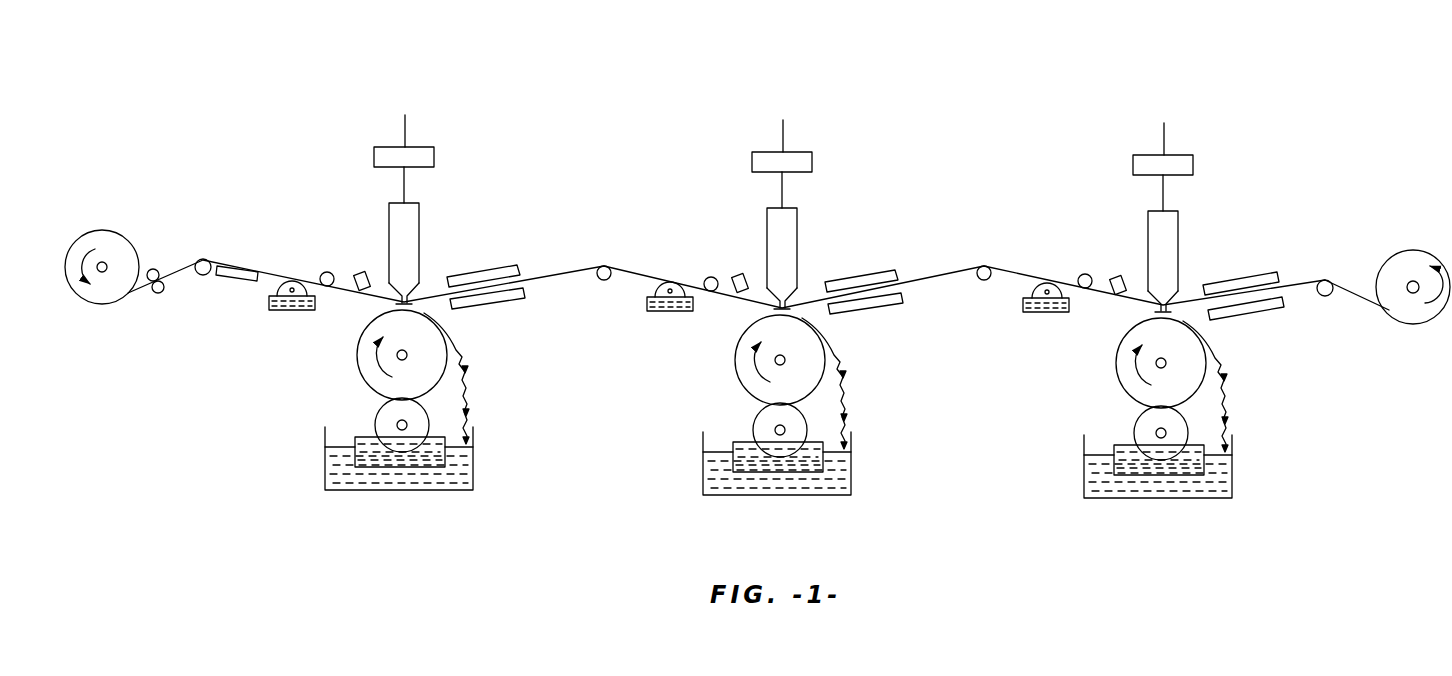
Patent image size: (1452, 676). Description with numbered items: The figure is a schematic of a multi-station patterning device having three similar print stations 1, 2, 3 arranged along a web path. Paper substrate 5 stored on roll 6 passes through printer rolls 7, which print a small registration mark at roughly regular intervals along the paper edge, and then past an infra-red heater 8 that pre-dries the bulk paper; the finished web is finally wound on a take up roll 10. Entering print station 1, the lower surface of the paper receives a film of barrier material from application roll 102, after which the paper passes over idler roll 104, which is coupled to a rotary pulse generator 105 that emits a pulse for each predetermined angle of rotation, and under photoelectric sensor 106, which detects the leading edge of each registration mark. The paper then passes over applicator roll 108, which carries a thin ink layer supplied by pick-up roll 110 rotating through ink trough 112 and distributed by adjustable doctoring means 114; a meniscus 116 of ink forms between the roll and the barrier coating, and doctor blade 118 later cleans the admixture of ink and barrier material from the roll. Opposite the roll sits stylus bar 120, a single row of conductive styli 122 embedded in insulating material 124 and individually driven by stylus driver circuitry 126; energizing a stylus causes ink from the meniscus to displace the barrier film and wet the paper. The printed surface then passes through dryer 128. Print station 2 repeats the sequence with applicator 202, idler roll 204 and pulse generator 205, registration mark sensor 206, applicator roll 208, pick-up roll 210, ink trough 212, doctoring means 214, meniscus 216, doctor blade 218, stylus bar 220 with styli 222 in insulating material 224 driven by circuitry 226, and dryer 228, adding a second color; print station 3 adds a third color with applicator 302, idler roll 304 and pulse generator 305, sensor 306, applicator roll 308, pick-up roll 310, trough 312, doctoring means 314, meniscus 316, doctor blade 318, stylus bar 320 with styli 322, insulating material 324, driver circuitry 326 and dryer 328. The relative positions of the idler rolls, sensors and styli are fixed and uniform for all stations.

The print station 1 is at (363, 199).
The print station 2 is at (752, 215).
The print station 3 is at (1130, 223).
The paper substrate 5 is at (136, 298).
The roll 6 is at (96, 228).
The printer rolls 7 is at (150, 266).
The infra-red heater 8 is at (224, 276).
The take-up roll 10 is at (1402, 258).
The application roll 102 is at (284, 310).
The idler roll 104 is at (262, 242).
The rotary pulse generator 105 is at (326, 272).
The photoelectric sensor 106 is at (358, 272).
The applicator roll 108 is at (360, 376).
The pick-up roll 110 is at (378, 418).
The ink trough 112 is at (412, 464).
The doctoring means 114 is at (360, 346).
The meniscus 116 is at (397, 305).
The doctor blade 118 is at (457, 353).
The stylus bar 120 is at (458, 235).
The styli 122 is at (406, 299).
The insulating material 124 is at (417, 210).
The stylus driver circuitry 126 is at (413, 147).
The dryer 128 is at (527, 266).
The applicator 202 is at (648, 302).
The idler roll 204 is at (648, 247).
The rotary pulse generator 205 is at (710, 277).
The registration mark sensor 206 is at (741, 274).
The applicator roller 208 is at (735, 360).
The pickup roller 210 is at (726, 428).
The coating liquid pan 212 is at (784, 482).
The coating layer on applicator roller 214 is at (703, 362).
The nip 216 is at (746, 319).
The excess coating flow 218 is at (856, 383).
The hopper 220 is at (836, 240).
The styli 222 is at (809, 276).
The hopper body 224 is at (814, 237).
The hopper feed 226 is at (802, 145).
The dryer plates 228 is at (899, 275).
The pretreatment applicator tray 302 is at (1024, 304).
The idler roll 304 is at (1028, 248).
The rotary pulse generator 305 is at (1085, 274).
The registration mark sensor 306 is at (1121, 276).
The applicator roller 308 is at (1116, 363).
The pickup roller 310 is at (1107, 431).
The coating liquid pan 312 is at (1160, 485).
The coating layer on applicator roller 314 is at (1082, 365).
The nip 316 is at (1127, 323).
The excess coating flow 318 is at (1235, 386).
The hopper 320 is at (1217, 243).
The styli 322 is at (1190, 279).
The hopper body 324 is at (1195, 240).
The hopper feed 326 is at (1183, 148).
The dryer plates 328 is at (1285, 275).